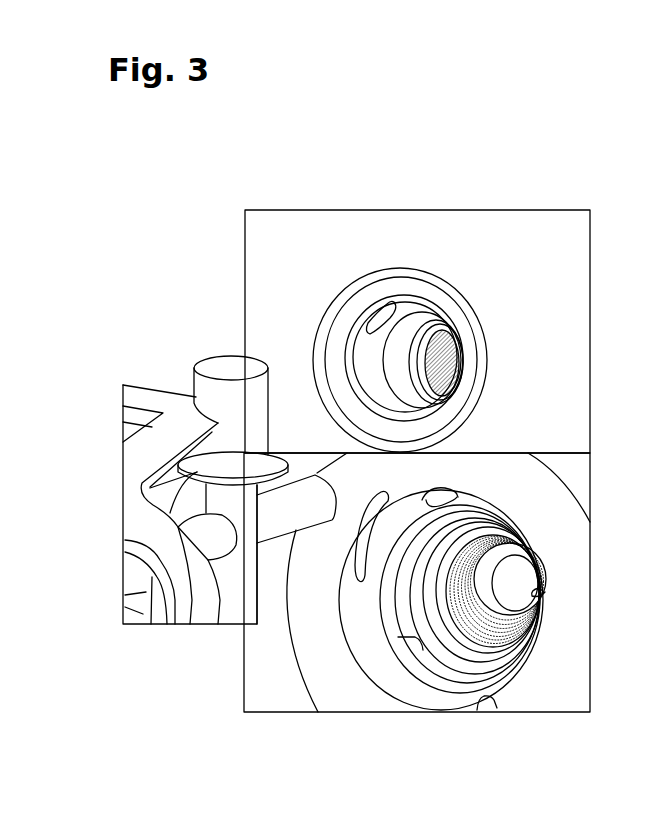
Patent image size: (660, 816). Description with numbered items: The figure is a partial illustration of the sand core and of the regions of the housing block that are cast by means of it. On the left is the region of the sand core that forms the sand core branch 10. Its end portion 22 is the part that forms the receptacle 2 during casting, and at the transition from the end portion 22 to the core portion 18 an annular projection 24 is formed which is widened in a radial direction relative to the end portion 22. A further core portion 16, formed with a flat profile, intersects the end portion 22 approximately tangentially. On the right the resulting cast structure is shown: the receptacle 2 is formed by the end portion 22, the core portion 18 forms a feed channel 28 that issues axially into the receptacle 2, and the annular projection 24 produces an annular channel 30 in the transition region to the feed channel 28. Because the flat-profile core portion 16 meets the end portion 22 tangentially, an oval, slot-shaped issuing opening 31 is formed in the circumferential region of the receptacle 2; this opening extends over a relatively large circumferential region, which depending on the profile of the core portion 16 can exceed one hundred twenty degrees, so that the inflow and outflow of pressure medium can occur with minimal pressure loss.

The receptacle 2 is at (419, 303).
The sand core branch 10 is at (215, 350).
The core portion 16 is at (135, 393).
The core portion 18 is at (235, 603).
The end portion 22 is at (207, 387).
The annular projection 24 is at (199, 606).
The feed channel 28 is at (539, 588).
The annular channel 30 is at (423, 650).
The issuing opening 31 is at (389, 303).